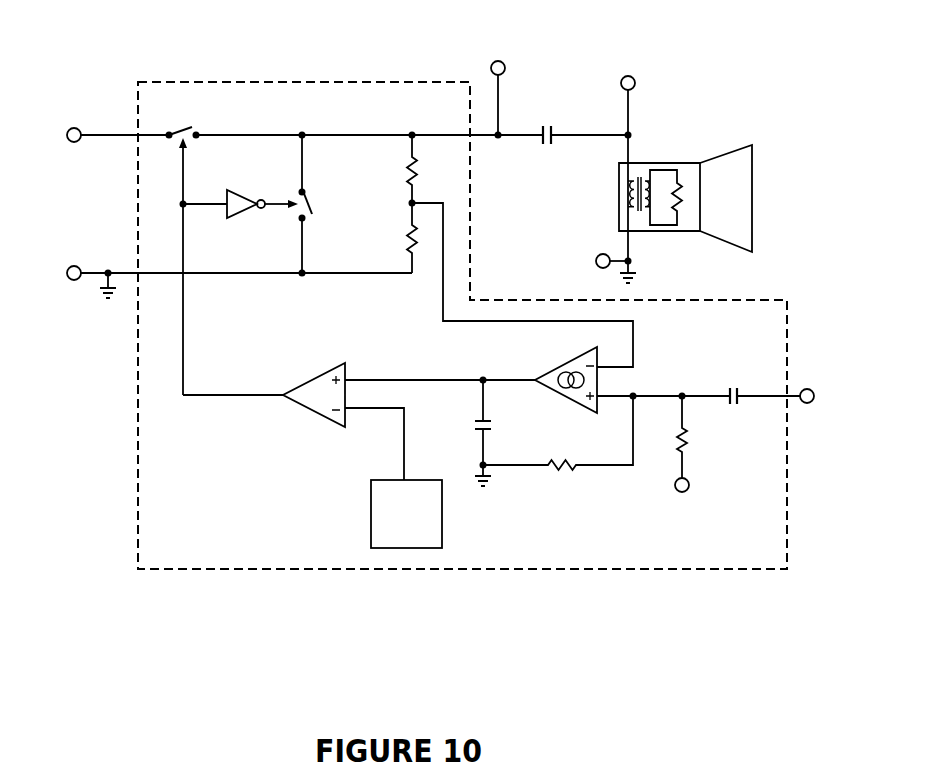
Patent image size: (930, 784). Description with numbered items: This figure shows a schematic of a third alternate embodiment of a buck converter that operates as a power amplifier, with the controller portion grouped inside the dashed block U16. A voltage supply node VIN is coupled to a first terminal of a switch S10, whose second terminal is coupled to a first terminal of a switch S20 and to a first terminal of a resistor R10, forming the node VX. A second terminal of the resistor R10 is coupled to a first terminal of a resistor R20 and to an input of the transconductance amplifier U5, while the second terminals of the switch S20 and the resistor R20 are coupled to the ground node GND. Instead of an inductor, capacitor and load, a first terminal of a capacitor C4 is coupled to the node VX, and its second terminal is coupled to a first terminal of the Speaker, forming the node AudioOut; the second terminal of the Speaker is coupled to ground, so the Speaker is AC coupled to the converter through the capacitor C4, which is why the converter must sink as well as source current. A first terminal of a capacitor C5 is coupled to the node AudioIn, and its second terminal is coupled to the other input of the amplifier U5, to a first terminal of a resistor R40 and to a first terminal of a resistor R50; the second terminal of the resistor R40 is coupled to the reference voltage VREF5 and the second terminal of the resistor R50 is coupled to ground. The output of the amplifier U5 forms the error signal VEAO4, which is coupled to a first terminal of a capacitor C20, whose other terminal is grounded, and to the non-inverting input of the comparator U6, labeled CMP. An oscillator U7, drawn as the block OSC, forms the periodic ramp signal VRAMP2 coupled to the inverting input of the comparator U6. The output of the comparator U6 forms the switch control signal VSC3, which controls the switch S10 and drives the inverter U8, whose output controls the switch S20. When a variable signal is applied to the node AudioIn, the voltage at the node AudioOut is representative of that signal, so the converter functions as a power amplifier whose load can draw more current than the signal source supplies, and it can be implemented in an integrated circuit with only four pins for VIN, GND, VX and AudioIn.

The integrated circuit / amplifier controller U16 is at (352, 79).
The switch S10 is at (181, 246).
The inverter U8 is at (239, 196).
The switch S20 is at (326, 204).
The resistor R10 is at (389, 169).
The resistor R20 is at (388, 238).
The voltage supply node VIN is at (95, 136).
The ground node GND is at (320, 273).
The node Vx VX is at (499, 83).
The capacitor C4 is at (550, 119).
The node AUDIO OUT AudioOut is at (626, 138).
The speaker Speaker is at (685, 186).
The comparator U6 is at (314, 395).
The comparator label CMP is at (320, 349).
The switch control signal VSC3 is at (233, 382).
The error amplifier output VEAO4 is at (440, 367).
The periodic ramp signal VRAMP2 is at (396, 431).
The oscillator U7 is at (388, 514).
The oscillator block OSC is at (407, 514).
The transconductance amplifier U5 is at (566, 371).
The capacitor C20 is at (510, 432).
The resistor R50 is at (558, 449).
The resistor R40 is at (707, 437).
The reference voltage VREF5 is at (682, 506).
The capacitor C5 is at (761, 379).
The AUDIO IN node AudioIn is at (841, 399).